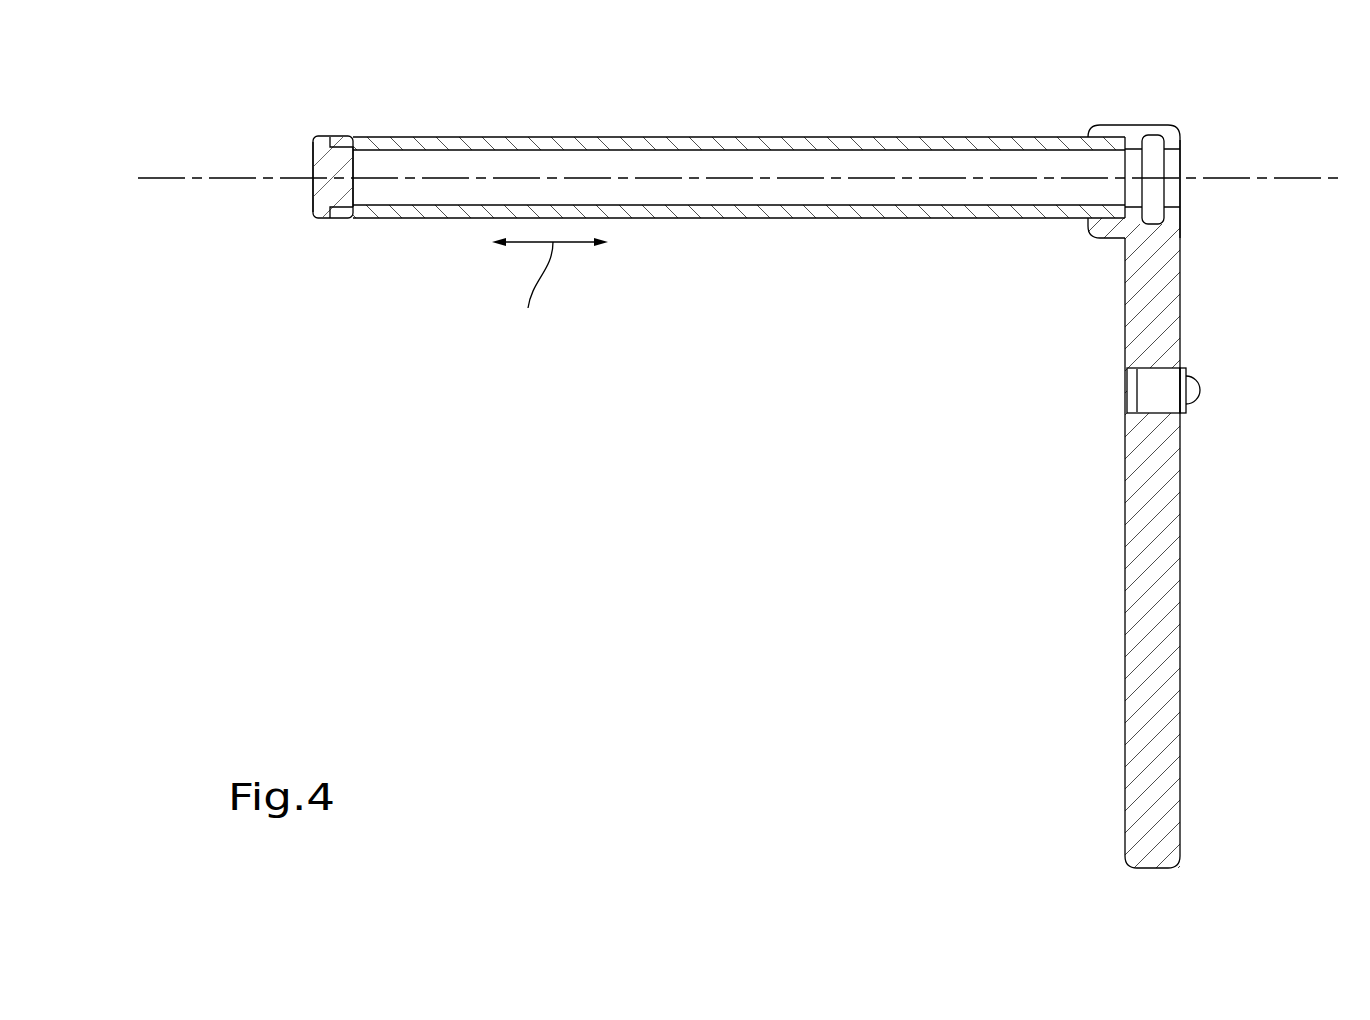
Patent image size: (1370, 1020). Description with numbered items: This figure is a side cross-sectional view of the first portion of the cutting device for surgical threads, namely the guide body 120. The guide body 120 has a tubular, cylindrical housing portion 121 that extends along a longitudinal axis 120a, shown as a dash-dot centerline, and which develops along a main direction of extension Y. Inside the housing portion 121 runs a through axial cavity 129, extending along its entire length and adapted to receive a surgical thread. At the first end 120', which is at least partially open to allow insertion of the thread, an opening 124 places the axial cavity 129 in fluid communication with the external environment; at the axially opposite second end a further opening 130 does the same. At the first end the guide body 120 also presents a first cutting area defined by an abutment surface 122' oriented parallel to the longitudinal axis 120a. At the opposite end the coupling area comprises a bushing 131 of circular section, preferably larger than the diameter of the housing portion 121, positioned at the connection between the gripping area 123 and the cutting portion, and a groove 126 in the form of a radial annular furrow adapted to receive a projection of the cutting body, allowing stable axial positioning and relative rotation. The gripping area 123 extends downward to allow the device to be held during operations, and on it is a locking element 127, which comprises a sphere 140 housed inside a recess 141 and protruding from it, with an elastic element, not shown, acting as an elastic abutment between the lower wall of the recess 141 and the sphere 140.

The guide body 120 is at (588, 402).
The longitudinal axis 120a is at (172, 177).
The first end 120' is at (246, 232).
The housing portion 121 is at (636, 142).
The abutment surface 122' is at (377, 129).
The gripping area 123 is at (1158, 662).
The opening 124 is at (323, 165).
The groove 126 is at (1153, 152).
The locking element 127 is at (1203, 354).
The axial cavity 129 is at (838, 188).
The opening 130 is at (1172, 192).
The bushing 131 is at (1110, 128).
The sphere 140 is at (1192, 392).
The recess 141 is at (1152, 392).